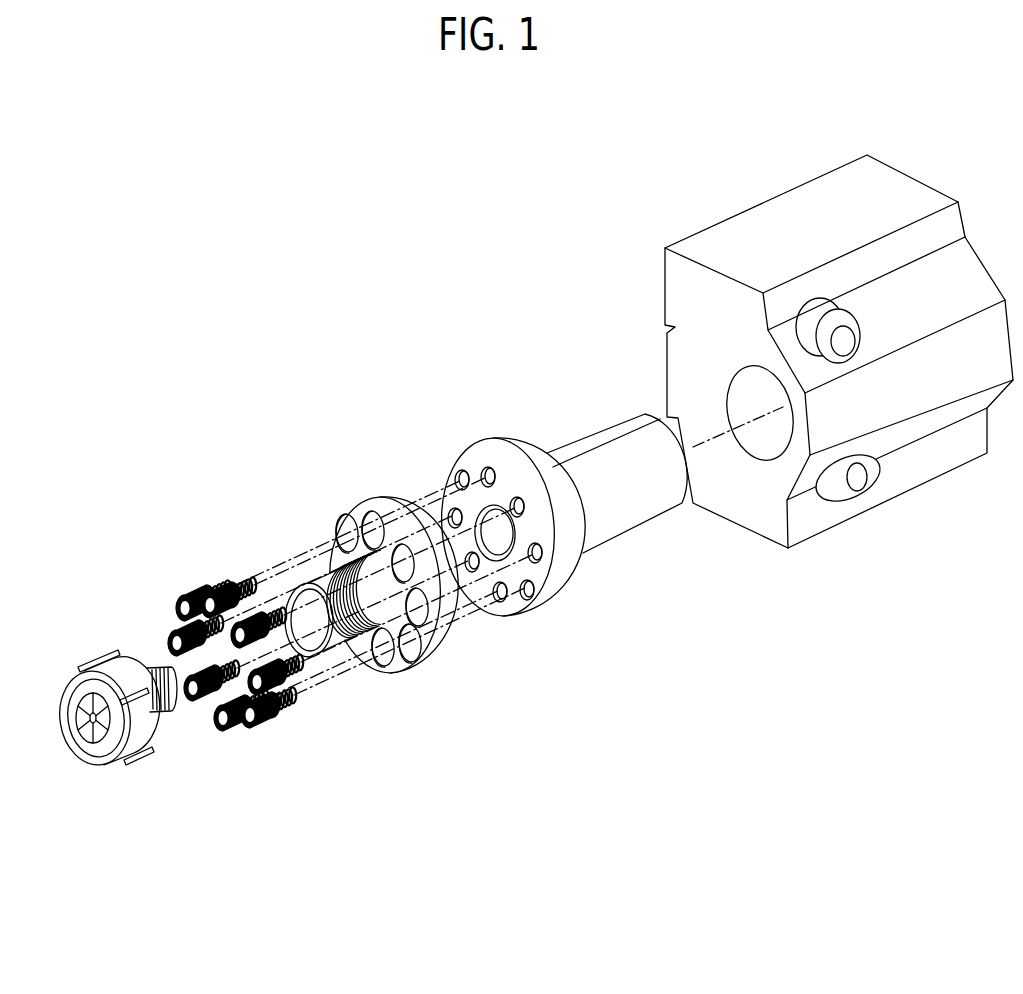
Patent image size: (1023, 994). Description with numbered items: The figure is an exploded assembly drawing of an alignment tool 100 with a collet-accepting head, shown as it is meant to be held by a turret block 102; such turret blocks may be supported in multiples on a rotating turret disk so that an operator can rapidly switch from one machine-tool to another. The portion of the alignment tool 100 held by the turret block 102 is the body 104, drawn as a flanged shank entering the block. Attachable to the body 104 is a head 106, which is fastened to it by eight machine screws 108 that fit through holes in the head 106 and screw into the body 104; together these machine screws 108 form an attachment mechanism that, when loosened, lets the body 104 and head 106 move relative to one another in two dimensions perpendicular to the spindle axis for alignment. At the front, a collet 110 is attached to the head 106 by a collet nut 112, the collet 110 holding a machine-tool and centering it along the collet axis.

The alignment tool 100 is at (655, 412).
The turret block 102 is at (707, 225).
The body 104 is at (553, 602).
The head 106 is at (425, 658).
The machine screws 108 is at (283, 707).
The collet 110 is at (177, 707).
The collet nut 112 is at (143, 757).